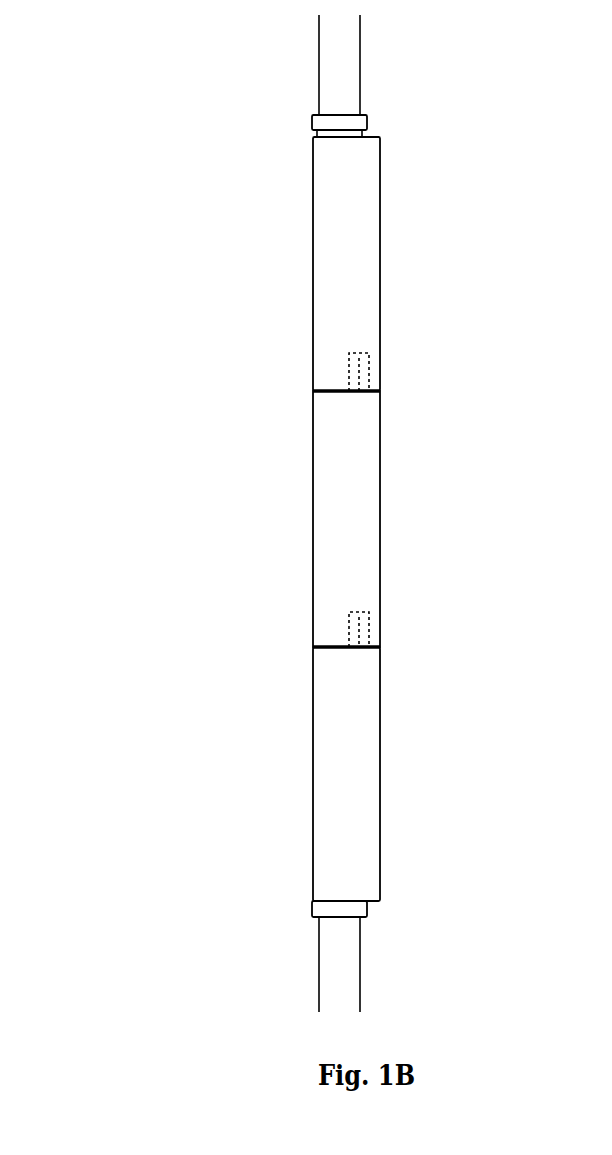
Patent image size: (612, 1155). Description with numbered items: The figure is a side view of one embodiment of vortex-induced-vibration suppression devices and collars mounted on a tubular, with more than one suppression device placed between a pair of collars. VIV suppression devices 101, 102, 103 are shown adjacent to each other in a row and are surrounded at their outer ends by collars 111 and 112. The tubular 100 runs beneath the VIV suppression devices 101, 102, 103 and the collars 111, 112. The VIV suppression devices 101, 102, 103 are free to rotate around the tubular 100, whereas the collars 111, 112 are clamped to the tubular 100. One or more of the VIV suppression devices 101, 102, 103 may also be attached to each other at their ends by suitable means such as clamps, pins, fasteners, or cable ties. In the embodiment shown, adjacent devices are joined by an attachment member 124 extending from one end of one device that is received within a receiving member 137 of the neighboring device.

The tubular 100 is at (367, 63).
The collar 111 is at (307, 120).
The VIV suppression device 101 is at (308, 262).
The receiving member 137 is at (365, 352).
The attachment member 124 is at (362, 373).
The VIV suppression device 102 is at (307, 537).
The VIV suppression device 103 is at (313, 745).
The collar 112 is at (303, 909).